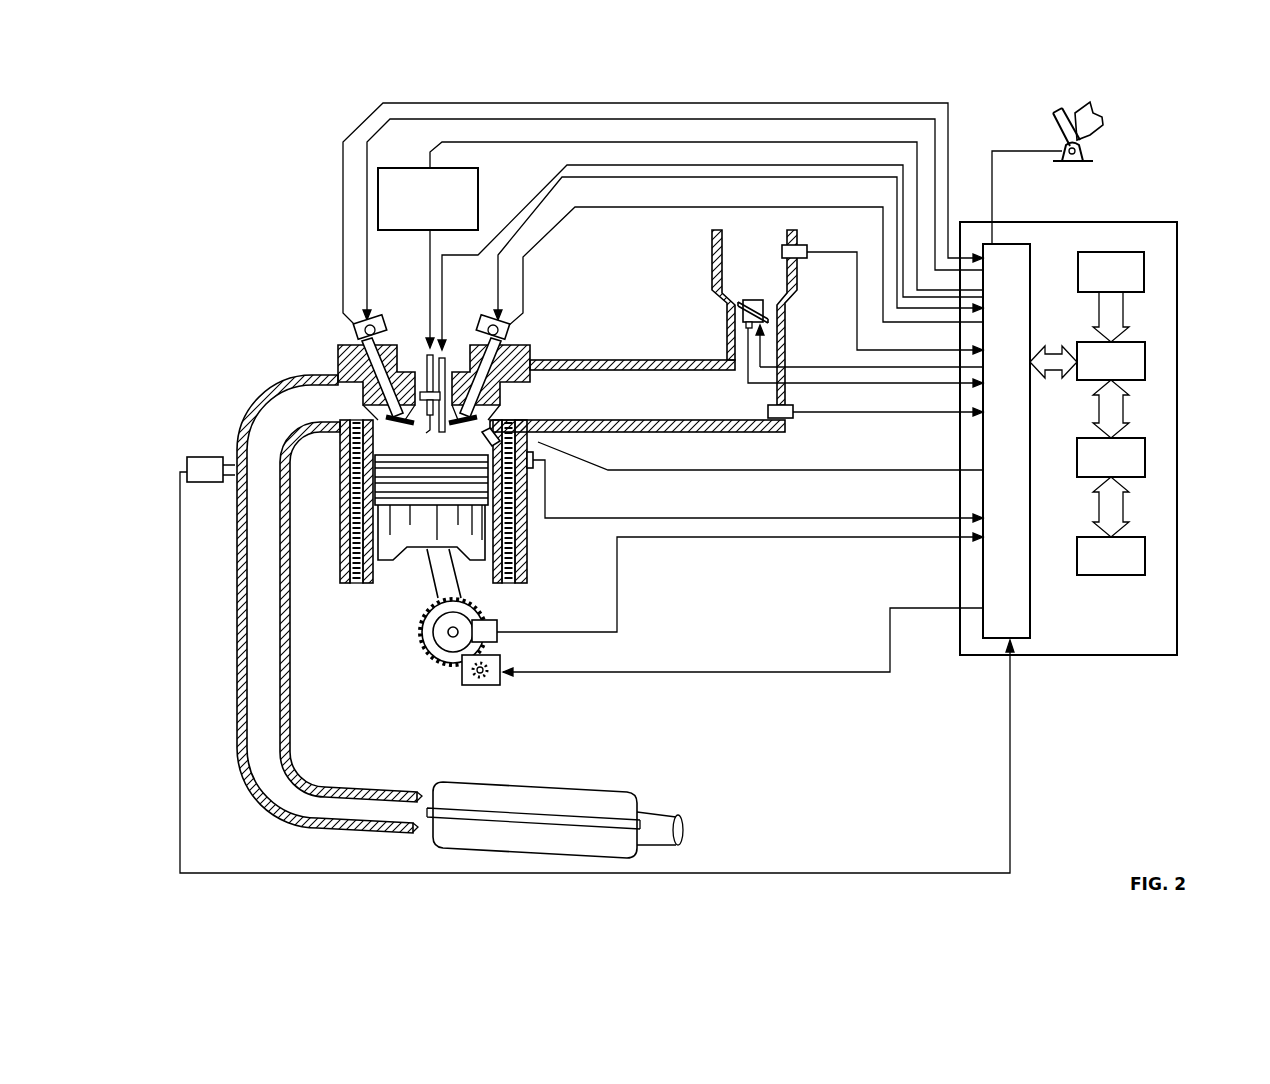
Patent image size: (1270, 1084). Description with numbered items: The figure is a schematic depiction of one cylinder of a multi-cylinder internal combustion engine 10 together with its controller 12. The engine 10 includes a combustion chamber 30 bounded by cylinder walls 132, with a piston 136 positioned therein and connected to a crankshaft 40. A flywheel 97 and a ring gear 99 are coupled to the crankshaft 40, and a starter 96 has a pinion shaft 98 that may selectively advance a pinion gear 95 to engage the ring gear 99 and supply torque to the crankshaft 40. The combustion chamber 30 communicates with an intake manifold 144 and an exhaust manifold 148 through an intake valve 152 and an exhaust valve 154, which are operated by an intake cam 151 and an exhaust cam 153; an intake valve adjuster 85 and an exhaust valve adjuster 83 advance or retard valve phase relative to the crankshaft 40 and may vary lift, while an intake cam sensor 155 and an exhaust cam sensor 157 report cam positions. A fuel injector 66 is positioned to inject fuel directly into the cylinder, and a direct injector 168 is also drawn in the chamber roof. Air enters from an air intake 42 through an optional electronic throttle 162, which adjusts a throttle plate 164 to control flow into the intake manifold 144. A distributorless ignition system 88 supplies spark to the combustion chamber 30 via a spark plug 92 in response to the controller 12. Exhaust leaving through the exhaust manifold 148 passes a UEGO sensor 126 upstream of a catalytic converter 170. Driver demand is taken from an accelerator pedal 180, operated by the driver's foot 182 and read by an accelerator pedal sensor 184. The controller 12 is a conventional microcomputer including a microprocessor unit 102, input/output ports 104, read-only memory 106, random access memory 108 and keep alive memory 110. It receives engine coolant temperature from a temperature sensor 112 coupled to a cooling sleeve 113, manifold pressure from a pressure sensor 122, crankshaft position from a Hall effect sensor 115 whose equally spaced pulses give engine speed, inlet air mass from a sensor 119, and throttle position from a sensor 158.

The internal combustion engine 10 is at (272, 298).
The controller 12 is at (1167, 222).
The combustion chamber 30 is at (430, 440).
The crankshaft 40 is at (437, 660).
The air intake 42 is at (760, 275).
The fuel injector 66 is at (540, 442).
The exhaust valve adjuster 83 is at (368, 300).
The intake valve adjuster 85 is at (508, 338).
The distributorless ignition system 88 is at (395, 168).
The spark plug 92 is at (425, 358).
The pinion gear 95 is at (483, 683).
The starter 96 is at (496, 684).
The flywheel 97 is at (430, 627).
The pinion shaft 98 is at (480, 678).
The ring gear 99 is at (452, 667).
The microprocessor unit 102 is at (1145, 356).
The input/output ports 104 is at (1032, 250).
The read-only memory 106 is at (1144, 270).
The random access memory 108 is at (1145, 455).
The keep alive memory 110 is at (1145, 553).
The temperature sensor 112 is at (545, 470).
The cooling sleeve 113 is at (510, 538).
The Hall effect sensor 115 is at (497, 620).
The air mass sensor 119 is at (797, 258).
The pressure sensor 122 is at (787, 420).
The UEGO sensor 126 is at (187, 458).
The cylinder walls 132 is at (380, 575).
The piston 136 is at (417, 535).
The intake manifold 144 is at (707, 410).
The exhaust manifold 148 is at (323, 413).
The intake cam 151 is at (497, 315).
The intake valve 152 is at (470, 418).
The exhaust cam 153 is at (380, 315).
The exhaust valve 154 is at (390, 418).
The intake cam sensor 155 is at (500, 330).
The exhaust cam sensor 157 is at (356, 330).
The throttle position sensor 158 is at (728, 328).
The electronic throttle 162 is at (770, 308).
The throttle plate 164 is at (740, 307).
The direct fuel injector 168 is at (446, 360).
The catalytic converter 170 is at (445, 782).
The accelerator pedal 180 is at (1052, 125).
The driver's foot 182 is at (1102, 115).
The accelerator pedal sensor 184 is at (1083, 151).